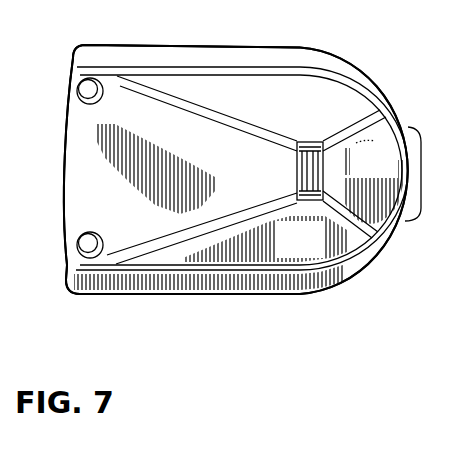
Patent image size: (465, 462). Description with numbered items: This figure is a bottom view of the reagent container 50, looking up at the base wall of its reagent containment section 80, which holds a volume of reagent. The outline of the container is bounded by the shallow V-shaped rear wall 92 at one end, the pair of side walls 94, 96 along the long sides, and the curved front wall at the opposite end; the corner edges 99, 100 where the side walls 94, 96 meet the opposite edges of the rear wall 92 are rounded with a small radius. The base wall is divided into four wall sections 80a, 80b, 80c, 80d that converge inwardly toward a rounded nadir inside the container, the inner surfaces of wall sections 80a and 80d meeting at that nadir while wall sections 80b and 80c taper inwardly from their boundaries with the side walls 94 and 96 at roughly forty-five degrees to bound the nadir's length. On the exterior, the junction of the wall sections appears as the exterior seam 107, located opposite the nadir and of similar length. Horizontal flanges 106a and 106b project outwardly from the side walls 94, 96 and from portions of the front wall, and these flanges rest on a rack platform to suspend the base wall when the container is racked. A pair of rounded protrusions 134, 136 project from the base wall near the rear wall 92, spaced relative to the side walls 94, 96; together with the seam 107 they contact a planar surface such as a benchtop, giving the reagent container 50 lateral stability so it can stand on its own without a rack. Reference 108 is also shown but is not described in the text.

The reagent container 50 is at (351, 301).
The reagent containment section 80 is at (374, 67).
The wall section 80a is at (135, 214).
The wall section 80b is at (316, 256).
The wall section 80c is at (306, 121).
The wall section 80d is at (391, 181).
The rear wall 92 is at (64, 159).
The side wall 94 is at (283, 74).
The side wall 96 is at (250, 271).
The corner edge 99 is at (75, 70).
The corner edge 100 is at (68, 267).
The horizontal flange 106a is at (198, 46).
The horizontal flange 106b is at (152, 293).
The exterior seam 107 is at (310, 172).
The side tab 108 is at (420, 156).
The protrusion 134 is at (79, 104).
The protrusion 136 is at (77, 236).